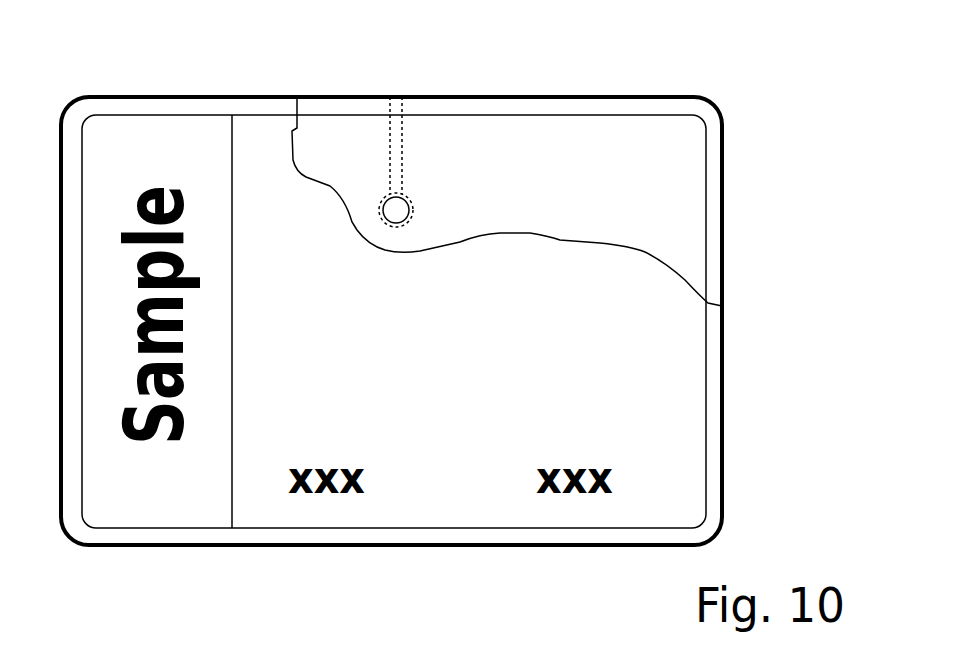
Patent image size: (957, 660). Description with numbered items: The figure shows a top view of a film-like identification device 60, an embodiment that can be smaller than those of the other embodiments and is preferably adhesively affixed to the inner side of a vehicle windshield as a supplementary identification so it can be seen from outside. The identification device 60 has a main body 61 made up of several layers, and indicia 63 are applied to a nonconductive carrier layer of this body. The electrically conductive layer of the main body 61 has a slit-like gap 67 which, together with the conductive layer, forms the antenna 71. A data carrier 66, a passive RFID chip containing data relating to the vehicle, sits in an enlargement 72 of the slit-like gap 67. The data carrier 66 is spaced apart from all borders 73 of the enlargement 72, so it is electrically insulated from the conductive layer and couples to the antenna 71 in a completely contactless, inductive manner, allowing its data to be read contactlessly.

The identification device 60 is at (584, 59).
The main body 61 is at (727, 352).
The indicia 63 is at (618, 315).
The data carrier 66 is at (400, 210).
The slit-like gap 67 is at (397, 140).
The antenna 71 is at (395, 80).
The enlargement 72 is at (377, 200).
The borders 73 is at (410, 215).